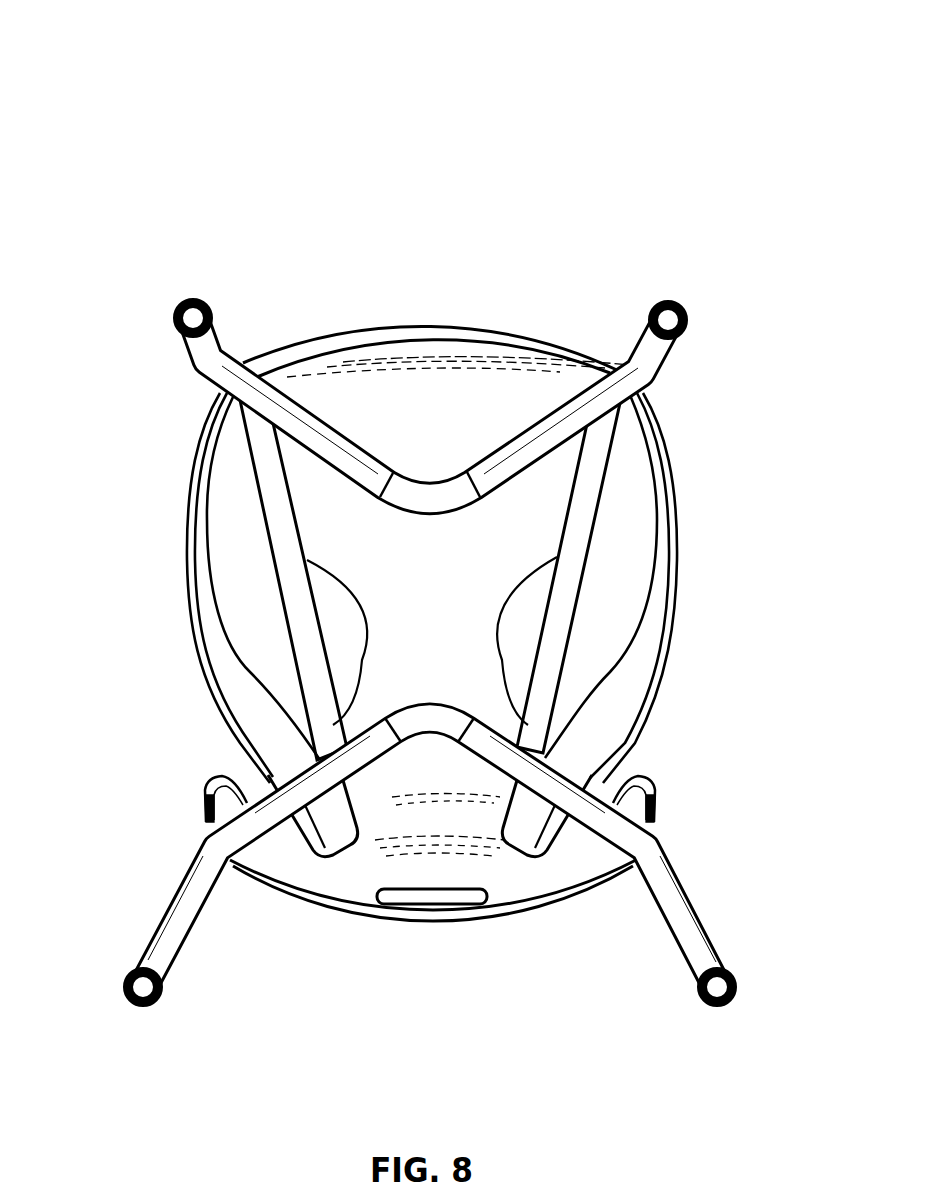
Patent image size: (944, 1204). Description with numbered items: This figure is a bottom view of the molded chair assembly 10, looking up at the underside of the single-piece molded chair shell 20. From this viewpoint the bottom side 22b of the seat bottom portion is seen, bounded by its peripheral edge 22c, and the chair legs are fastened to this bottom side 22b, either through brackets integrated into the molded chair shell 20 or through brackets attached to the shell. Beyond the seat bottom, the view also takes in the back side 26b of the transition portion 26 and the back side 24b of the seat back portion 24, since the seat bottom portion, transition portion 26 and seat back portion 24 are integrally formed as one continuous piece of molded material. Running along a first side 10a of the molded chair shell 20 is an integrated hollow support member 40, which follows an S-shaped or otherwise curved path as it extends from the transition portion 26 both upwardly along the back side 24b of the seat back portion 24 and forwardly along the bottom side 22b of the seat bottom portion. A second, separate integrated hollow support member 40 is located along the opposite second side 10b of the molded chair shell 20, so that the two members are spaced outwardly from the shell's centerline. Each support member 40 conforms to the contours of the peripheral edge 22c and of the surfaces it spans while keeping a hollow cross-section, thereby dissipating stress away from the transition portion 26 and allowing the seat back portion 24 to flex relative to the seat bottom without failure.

The chair assembly 10 is at (417, 538).
The side 10a is at (690, 500).
The second side 10b is at (148, 518).
The molded chair shell 20 is at (423, 481).
The bottom side 22b is at (447, 413).
The peripheral edge 22c is at (353, 327).
The seat back portion 24 is at (433, 931).
The back side 24b is at (500, 870).
The transition portion 26 is at (424, 840).
The back side 26b is at (447, 817).
The integrated hollow support member 40 is at (333, 860).